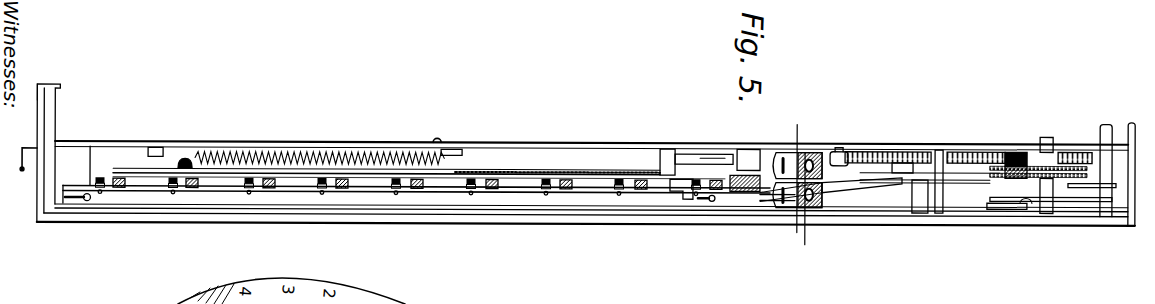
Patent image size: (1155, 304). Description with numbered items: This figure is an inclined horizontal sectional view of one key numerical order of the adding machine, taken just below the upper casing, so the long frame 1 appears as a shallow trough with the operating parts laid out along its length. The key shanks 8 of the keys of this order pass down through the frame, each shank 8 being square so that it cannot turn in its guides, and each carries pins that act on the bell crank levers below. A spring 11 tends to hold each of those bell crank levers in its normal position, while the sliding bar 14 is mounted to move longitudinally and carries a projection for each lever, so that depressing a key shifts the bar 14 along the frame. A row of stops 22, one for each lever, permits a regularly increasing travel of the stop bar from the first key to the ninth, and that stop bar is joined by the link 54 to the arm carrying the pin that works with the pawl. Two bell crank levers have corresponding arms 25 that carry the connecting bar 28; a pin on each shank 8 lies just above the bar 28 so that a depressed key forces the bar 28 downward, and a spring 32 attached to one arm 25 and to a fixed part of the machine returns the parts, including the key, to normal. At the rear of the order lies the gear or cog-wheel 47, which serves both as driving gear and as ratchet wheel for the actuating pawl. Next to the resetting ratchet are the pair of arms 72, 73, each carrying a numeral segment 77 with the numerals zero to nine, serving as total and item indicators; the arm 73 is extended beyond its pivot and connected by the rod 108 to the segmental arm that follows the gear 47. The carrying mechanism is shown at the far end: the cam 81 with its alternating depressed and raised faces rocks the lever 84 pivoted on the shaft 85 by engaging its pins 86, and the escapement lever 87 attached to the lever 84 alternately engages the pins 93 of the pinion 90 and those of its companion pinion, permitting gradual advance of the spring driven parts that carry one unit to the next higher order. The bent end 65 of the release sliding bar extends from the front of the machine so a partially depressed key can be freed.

The frame 1 is at (56, 121).
The key shank 8 is at (119, 176).
The spring 11 is at (256, 191).
The sliding bar 14 is at (128, 193).
The stops 22 is at (343, 191).
The bell crank lever arm 25 is at (268, 167).
The connecting bar 28 is at (165, 170).
The spring 32 is at (236, 152).
The gear or cog-wheel 47 is at (899, 148).
The link 54 is at (862, 195).
The bent end of sliding bar 65 is at (22, 182).
The arm 72 is at (829, 148).
The arm 73 is at (842, 189).
The numeral segment 77 is at (798, 183).
The cam 81 is at (1000, 212).
The rocking lever 84 is at (1090, 205).
The shaft 85 is at (1106, 121).
The pins 86 is at (1062, 200).
The escapement lever 87 is at (1110, 200).
The pinion 90 is at (1030, 162).
The pins 93 is at (998, 155).
The rod 108 is at (944, 188).